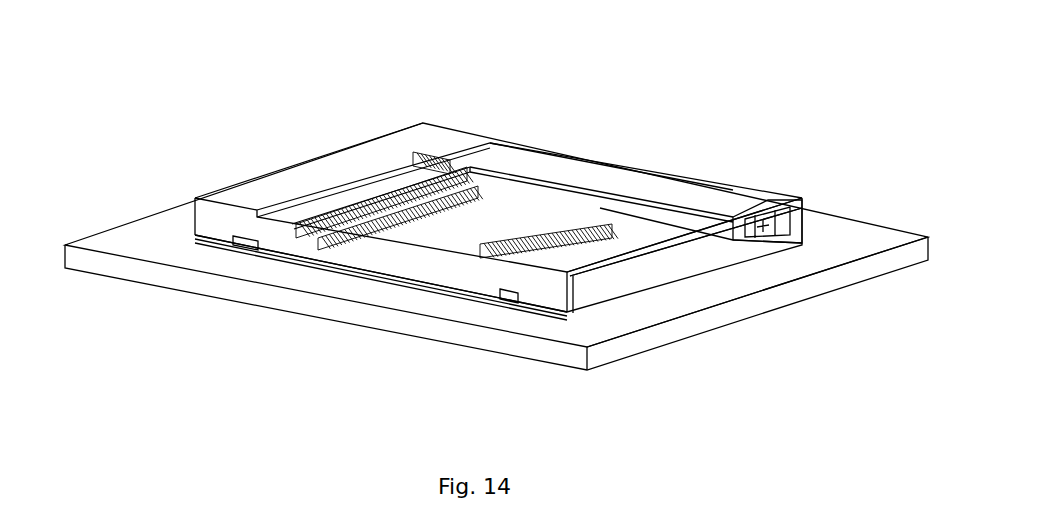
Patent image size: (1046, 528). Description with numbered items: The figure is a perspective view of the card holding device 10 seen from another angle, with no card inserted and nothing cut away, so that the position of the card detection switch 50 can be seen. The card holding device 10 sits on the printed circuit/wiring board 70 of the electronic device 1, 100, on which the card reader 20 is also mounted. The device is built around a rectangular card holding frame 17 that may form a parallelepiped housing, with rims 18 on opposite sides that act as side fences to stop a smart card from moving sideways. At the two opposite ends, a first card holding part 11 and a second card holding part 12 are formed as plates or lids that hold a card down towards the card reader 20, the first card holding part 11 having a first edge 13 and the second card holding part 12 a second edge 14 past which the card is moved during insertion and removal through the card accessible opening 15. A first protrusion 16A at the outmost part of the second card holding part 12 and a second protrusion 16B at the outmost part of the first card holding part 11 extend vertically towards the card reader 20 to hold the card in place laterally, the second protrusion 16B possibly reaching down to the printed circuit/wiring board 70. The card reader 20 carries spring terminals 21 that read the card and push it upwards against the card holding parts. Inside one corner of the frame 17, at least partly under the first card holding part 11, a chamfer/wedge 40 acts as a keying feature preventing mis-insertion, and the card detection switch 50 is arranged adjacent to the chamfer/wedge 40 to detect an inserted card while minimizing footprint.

The electronic device 1 is at (496, 257).
The printed circuit/wiring board 70 is at (496, 257).
The electronic device 100 is at (152, 237).
The card holding device 10 is at (517, 224).
The first card holding part 11 is at (657, 230).
The second card holding part 12 is at (312, 172).
The first edge of the first card holding part 13 is at (663, 212).
The second edge of the second card holding part 14 is at (300, 200).
The card accessible opening 15 is at (632, 188).
The first protrusion at the second card holding part 16A is at (335, 148).
The second protrusion at the first card holding part 16B is at (620, 275).
The card holding frame 17 is at (403, 265).
The rims of the card holding frame 18 is at (520, 158).
The card reader 20 is at (543, 205).
The spring terminals 21 is at (403, 223).
The chamfer/wedge of the card holding device 40 is at (782, 250).
The card detection switch 50 is at (748, 230).